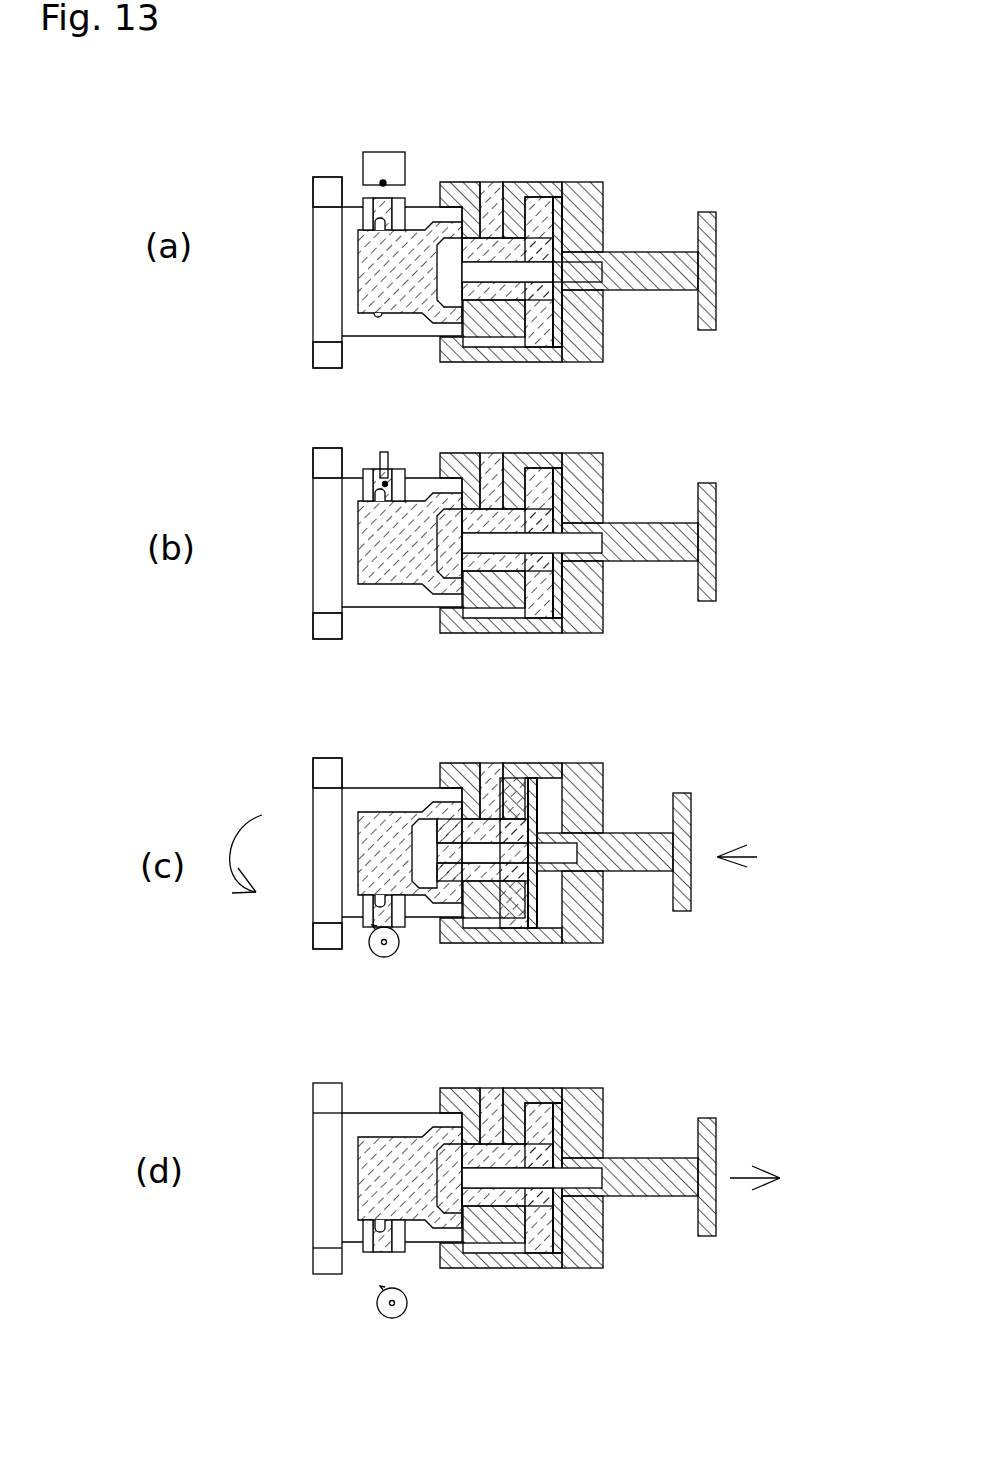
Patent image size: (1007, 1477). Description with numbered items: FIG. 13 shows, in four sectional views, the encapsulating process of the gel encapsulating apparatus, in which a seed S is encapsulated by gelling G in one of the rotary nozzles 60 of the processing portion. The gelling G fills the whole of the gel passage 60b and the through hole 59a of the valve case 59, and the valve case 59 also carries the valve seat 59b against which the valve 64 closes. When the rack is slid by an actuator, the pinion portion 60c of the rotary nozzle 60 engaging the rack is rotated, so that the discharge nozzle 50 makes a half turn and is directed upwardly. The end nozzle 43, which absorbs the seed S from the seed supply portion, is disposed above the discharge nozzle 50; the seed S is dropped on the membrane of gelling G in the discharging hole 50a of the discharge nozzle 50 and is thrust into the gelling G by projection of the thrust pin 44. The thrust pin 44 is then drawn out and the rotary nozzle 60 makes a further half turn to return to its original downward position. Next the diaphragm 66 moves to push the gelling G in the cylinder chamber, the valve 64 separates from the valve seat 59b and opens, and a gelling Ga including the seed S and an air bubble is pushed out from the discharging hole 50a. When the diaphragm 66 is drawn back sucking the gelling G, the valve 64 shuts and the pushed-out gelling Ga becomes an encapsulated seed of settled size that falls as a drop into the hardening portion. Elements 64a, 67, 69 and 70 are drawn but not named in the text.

The end nozzle 43 is at (405, 152).
The thrust pin 44 is at (381, 460).
The discharge nozzle 50 is at (403, 197).
The discharging hole 50a is at (378, 232).
The seed S is at (382, 185).
The gelling G is at (370, 270).
The gelling including seed and air bubble Ga is at (386, 958).
The valve case 59 is at (518, 187).
The through hole 59a is at (497, 297).
The valve seat 59b is at (470, 905).
The rotary nozzle 60 is at (422, 330).
The gel passage 60b is at (387, 312).
The pinion portion 60c is at (323, 355).
The valve 64 is at (453, 247).
The rod end 64a is at (582, 270).
The diaphragm 66 is at (558, 197).
The end cap 67 is at (597, 185).
The head 69 is at (703, 327).
The push rod 70 is at (655, 290).